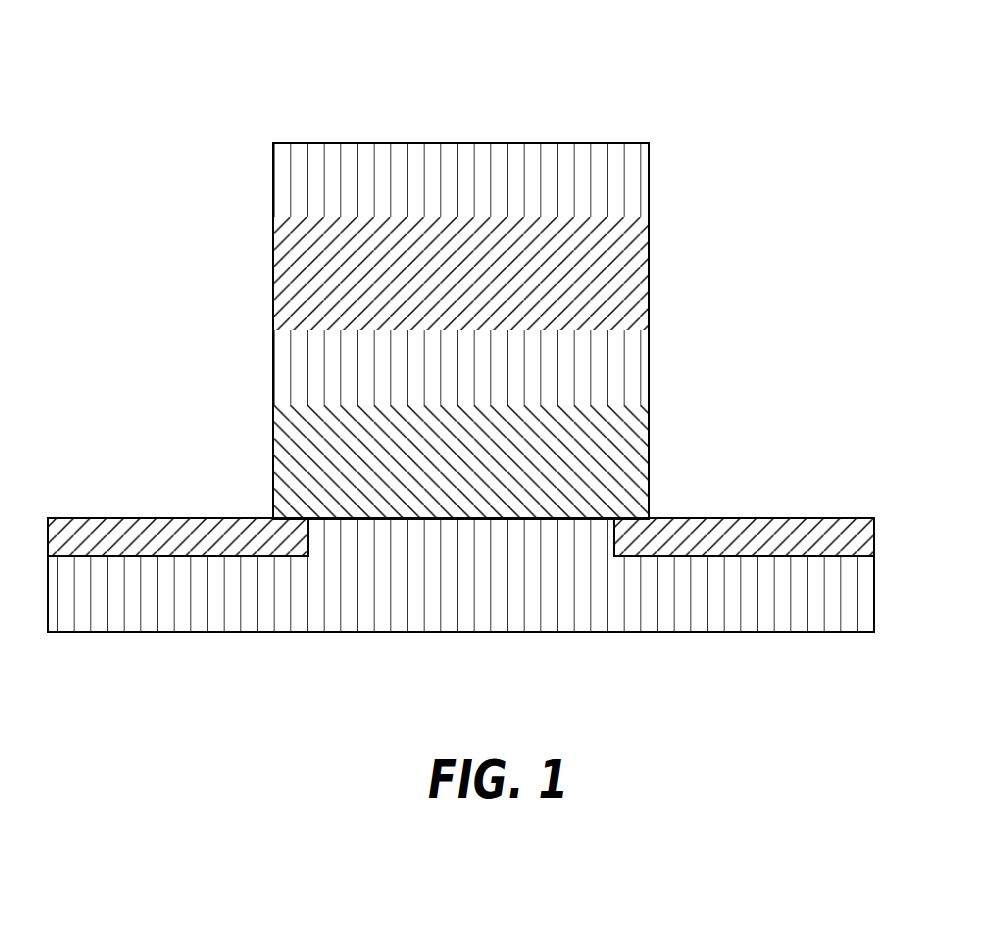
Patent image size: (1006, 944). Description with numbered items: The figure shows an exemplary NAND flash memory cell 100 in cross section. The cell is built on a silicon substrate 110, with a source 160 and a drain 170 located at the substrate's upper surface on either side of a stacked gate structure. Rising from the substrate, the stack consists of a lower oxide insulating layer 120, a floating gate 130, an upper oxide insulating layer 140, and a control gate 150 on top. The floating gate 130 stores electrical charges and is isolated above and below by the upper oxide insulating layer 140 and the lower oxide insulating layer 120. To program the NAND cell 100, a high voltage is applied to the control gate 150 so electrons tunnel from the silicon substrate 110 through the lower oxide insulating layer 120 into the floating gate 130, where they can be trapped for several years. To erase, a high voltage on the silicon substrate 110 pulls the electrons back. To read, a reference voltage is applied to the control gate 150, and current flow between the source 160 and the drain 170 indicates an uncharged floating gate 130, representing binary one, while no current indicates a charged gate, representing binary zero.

The NAND flash memory cell 100 is at (930, 88).
The silicon substrate 110 is at (472, 604).
The lower oxide insulating layer 120 is at (474, 475).
The floating gate 130 is at (474, 378).
The upper oxide insulating layer 140 is at (474, 286).
The control gate 150 is at (461, 143).
The source 160 is at (162, 518).
The drain 170 is at (761, 518).